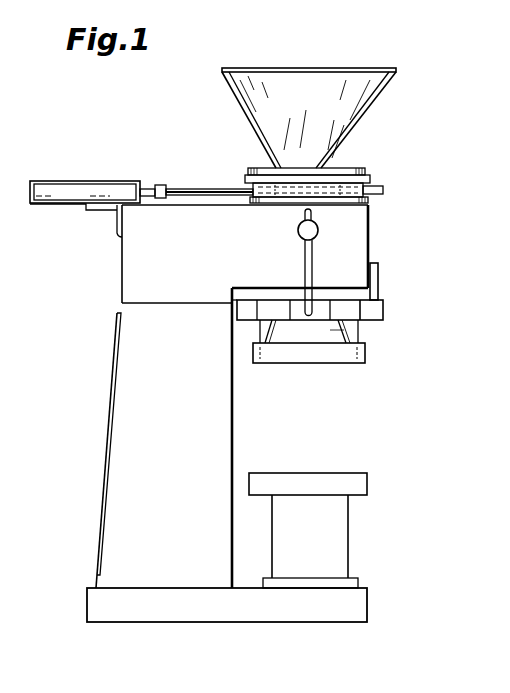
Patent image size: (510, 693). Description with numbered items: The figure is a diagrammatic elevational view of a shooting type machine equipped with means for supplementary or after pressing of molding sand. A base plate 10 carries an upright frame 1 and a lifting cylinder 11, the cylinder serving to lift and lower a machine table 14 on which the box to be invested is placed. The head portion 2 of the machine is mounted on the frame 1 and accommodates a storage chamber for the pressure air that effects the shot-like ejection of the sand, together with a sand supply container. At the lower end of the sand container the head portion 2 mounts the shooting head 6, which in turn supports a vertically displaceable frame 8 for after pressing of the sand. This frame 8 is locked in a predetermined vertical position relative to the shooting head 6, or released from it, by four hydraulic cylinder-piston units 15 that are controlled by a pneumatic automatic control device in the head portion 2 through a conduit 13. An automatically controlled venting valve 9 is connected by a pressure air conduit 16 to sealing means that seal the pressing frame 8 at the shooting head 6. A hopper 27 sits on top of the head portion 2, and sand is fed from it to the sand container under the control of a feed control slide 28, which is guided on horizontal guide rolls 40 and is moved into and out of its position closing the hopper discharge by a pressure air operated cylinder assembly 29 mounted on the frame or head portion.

The upright frame 1 is at (128, 427).
The head portion 2 is at (143, 277).
The shooting head 6 is at (345, 335).
The frame for supplementary or after pressing 8 is at (337, 357).
The venting valve 9 is at (318, 226).
The base plate 10 is at (364, 602).
The lifting cylinder 11 is at (340, 557).
The conduit 13 is at (380, 290).
The machine table 14 is at (368, 487).
The hydraulic cylinder-piston units 15 is at (384, 310).
The pressure air conduit 16 is at (313, 291).
The hopper 27 is at (373, 101).
The feed control slide 28 is at (383, 190).
The pressure air operated cylinder assembly 29 is at (74, 205).
The horizontal guide rolls 40 is at (351, 188).